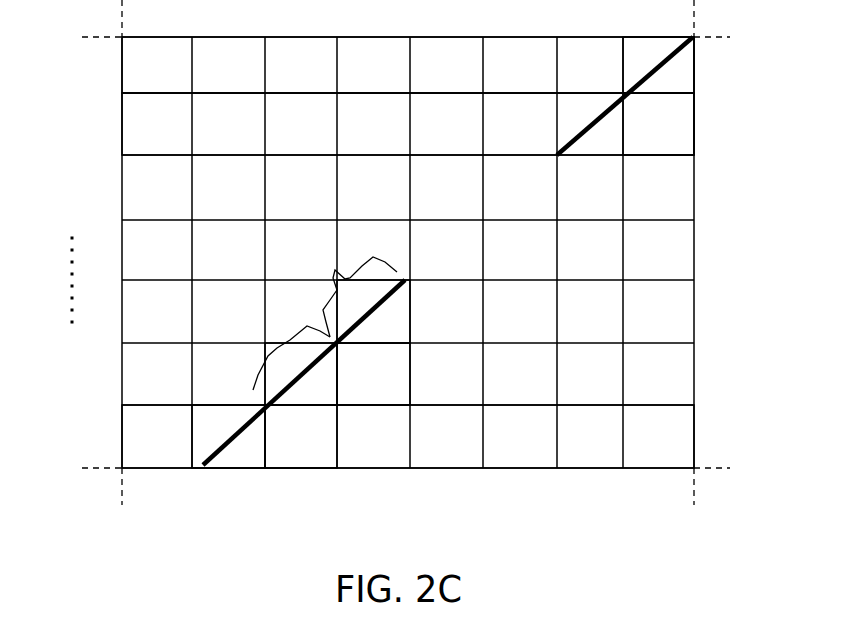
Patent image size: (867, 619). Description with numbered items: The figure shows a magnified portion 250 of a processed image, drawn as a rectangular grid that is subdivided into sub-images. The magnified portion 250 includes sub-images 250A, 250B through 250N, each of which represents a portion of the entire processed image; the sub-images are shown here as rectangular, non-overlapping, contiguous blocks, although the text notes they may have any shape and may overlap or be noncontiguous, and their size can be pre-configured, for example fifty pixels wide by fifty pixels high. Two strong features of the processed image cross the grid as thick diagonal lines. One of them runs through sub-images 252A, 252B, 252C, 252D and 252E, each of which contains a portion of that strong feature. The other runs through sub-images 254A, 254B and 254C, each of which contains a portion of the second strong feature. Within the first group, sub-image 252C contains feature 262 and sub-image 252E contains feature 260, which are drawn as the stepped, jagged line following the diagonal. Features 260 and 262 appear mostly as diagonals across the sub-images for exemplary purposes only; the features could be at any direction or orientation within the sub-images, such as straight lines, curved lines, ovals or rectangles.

The magnified portion 250 is at (626, 515).
The sub-image 250A is at (140, 62).
The sub-image 250B is at (140, 123).
The sub-image 250N is at (142, 433).
The sub-image 252A is at (243, 450).
The sub-image 252B is at (282, 450).
The sub-image 252C is at (323, 383).
The sub-image 252D is at (348, 383).
The sub-image 252E is at (392, 317).
The sub-image 254A is at (603, 123).
The sub-image 254B is at (658, 122).
The sub-image 254C is at (685, 62).
The feature 260 is at (340, 282).
The feature 262 is at (277, 352).